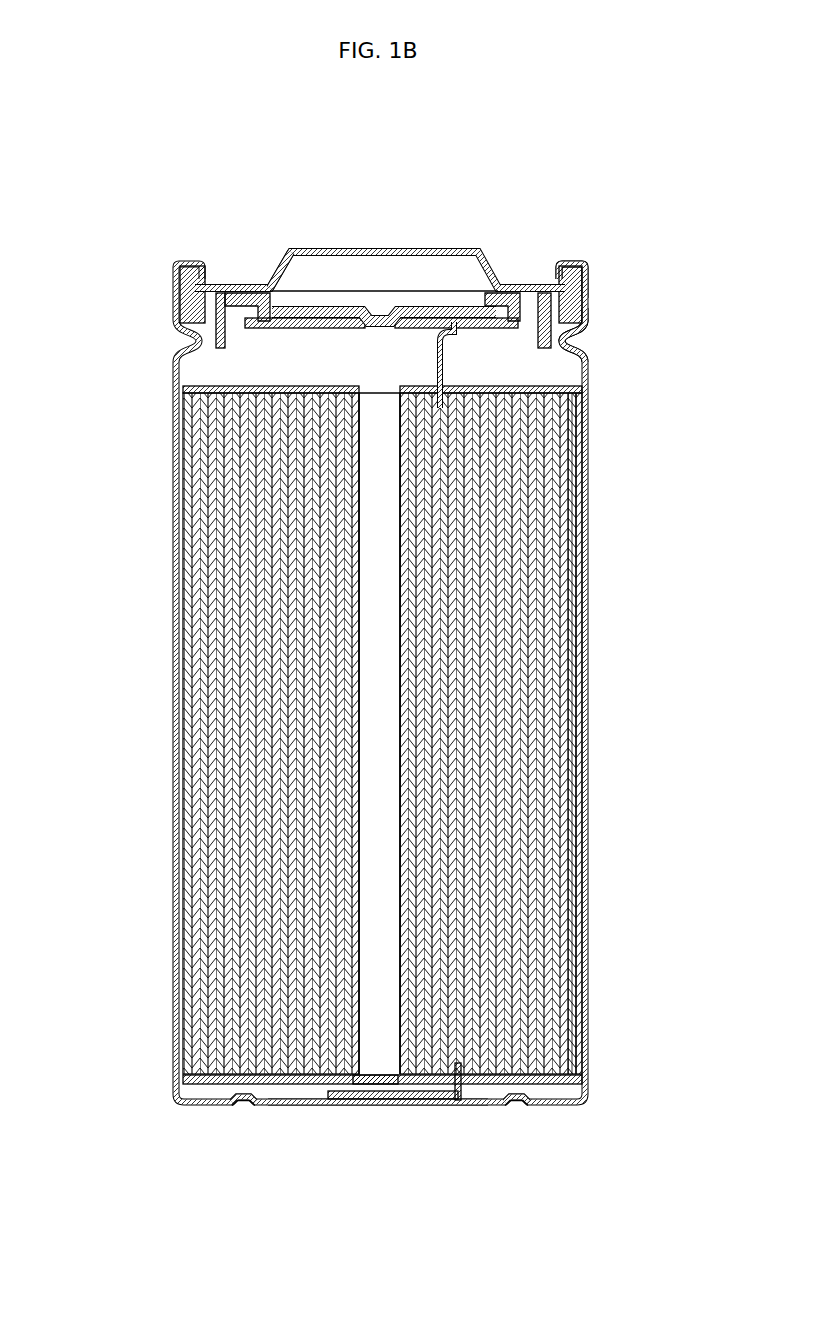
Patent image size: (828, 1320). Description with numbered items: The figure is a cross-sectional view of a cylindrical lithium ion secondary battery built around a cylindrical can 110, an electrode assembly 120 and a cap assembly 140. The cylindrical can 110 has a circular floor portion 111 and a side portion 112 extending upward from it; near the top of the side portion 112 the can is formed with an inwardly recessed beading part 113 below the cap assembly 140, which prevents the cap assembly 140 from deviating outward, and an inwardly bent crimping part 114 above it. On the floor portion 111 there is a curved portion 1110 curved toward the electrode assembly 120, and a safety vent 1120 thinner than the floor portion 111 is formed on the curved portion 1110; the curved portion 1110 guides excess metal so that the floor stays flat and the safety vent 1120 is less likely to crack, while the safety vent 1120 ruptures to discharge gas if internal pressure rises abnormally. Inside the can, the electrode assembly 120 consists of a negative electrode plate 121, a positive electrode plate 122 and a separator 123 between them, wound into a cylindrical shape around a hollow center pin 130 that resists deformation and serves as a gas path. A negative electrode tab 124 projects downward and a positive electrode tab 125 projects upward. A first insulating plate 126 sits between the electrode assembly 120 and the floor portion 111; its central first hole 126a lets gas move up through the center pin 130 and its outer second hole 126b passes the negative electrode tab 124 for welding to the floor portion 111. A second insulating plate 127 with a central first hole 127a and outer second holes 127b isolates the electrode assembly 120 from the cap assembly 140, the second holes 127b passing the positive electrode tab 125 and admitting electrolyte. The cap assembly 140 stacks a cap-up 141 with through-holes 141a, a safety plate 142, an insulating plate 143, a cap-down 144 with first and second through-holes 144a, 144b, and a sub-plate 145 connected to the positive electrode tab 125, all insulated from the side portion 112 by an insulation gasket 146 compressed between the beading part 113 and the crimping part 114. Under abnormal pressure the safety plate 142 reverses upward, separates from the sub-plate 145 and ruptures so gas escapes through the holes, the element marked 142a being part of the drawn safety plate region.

The cylindrical can 110 is at (118, 208).
The floor portion 111 is at (331, 1111).
The side portion 112 is at (578, 843).
The beading part 113 is at (552, 323).
The crimping part 114 is at (567, 254).
The electrode assembly 120 is at (582, 581).
The negative electrode plate 121 is at (580, 433).
The positive electrode plate 122 is at (580, 503).
The separator 123 is at (580, 462).
The negative electrode tab 124 is at (403, 1092).
The positive electrode tab 125 is at (558, 343).
The first insulating plate 126 is at (580, 1027).
The first hole 126a is at (367, 1077).
The second hole 126b is at (451, 1093).
The second insulating plate 127 is at (573, 381).
The first hole 127a is at (358, 383).
The second holes 127b is at (512, 378).
The center pin 130 is at (410, 756).
The cap assembly 140 is at (222, 171).
The cap-up 141 is at (403, 240).
The through-holes 141a is at (268, 256).
The safety plate 142 is at (452, 298).
The safety vent tab 142a is at (366, 326).
The insulating plate 143 is at (515, 290).
The cap-down 144 is at (318, 300).
The first through-hole 144a is at (347, 318).
The second through-hole 144b is at (200, 327).
The sub-plate 145 is at (284, 298).
The insulation gasket 146 is at (545, 270).
The curved portion 1110 is at (214, 1086).
The safety vent 1120 is at (236, 1111).